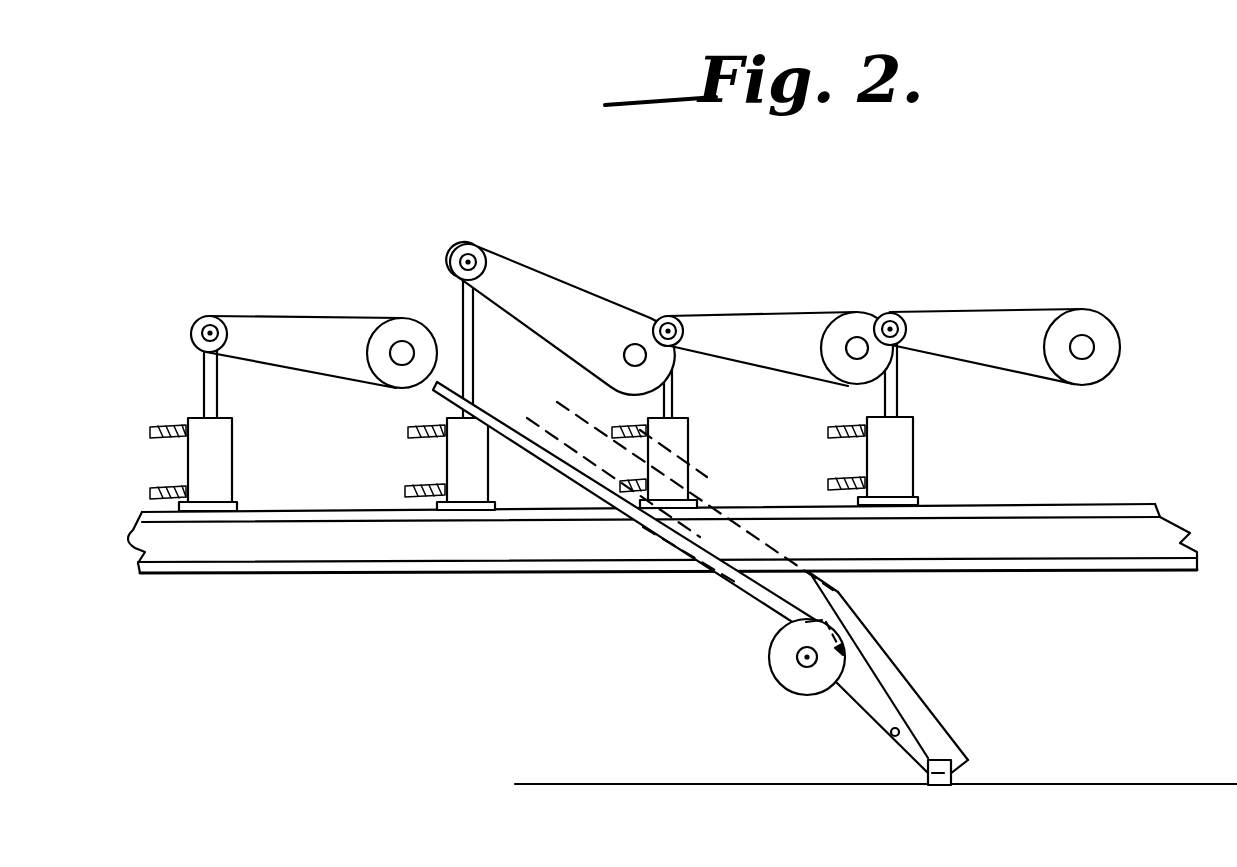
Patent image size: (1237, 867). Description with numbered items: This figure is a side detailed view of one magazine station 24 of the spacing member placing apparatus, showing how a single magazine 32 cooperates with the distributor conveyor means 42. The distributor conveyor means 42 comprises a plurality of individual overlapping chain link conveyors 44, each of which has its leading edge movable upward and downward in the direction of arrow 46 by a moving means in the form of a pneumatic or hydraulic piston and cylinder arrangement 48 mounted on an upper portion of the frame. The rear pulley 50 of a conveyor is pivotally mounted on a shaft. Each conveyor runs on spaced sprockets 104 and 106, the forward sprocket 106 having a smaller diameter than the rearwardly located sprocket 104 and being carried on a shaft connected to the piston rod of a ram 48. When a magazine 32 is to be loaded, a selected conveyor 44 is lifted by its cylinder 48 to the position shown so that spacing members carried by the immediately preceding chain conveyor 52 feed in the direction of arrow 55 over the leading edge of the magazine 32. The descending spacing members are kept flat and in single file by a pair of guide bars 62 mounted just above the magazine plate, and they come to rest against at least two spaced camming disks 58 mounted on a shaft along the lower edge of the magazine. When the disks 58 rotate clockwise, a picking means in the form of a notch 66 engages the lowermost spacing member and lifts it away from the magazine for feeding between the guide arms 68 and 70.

The magazine station 24 is at (483, 188).
The magazine 32 is at (738, 587).
The distributor conveyor means 42 is at (608, 274).
The chain link conveyor 44 is at (803, 316).
The arrow 46 is at (496, 350).
The piston and cylinder arrangement 48 is at (227, 478).
The rear pulley 50 is at (857, 353).
The chain conveyor 52 is at (303, 373).
The arrow 55 is at (450, 312).
The camming disk 58 is at (790, 687).
The guide bar 62 is at (690, 545).
The notch 66 is at (835, 625).
The guide arm 68 is at (871, 719).
The guide arm 70 is at (907, 680).
The sprocket 104 is at (390, 326).
The sprocket 106 is at (214, 318).